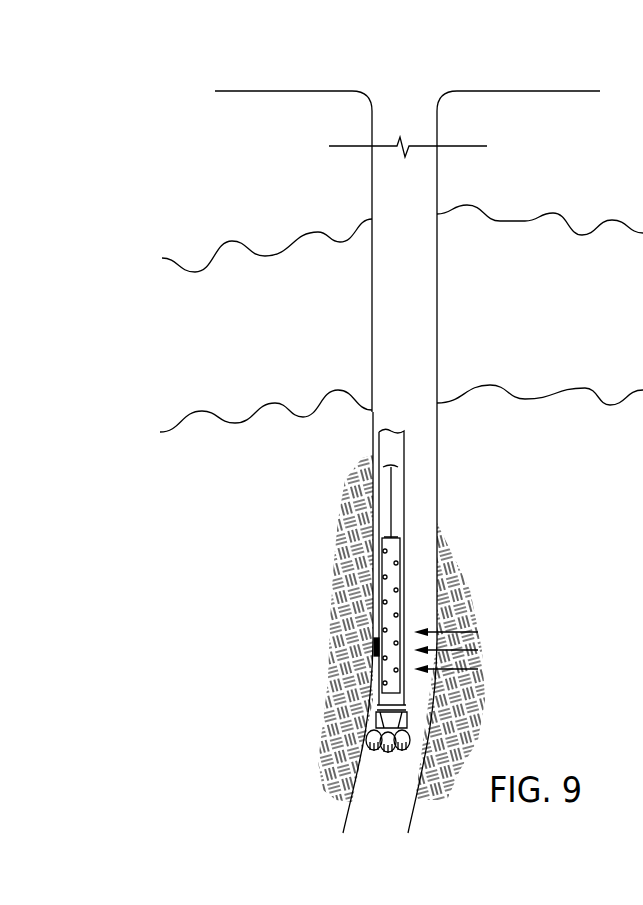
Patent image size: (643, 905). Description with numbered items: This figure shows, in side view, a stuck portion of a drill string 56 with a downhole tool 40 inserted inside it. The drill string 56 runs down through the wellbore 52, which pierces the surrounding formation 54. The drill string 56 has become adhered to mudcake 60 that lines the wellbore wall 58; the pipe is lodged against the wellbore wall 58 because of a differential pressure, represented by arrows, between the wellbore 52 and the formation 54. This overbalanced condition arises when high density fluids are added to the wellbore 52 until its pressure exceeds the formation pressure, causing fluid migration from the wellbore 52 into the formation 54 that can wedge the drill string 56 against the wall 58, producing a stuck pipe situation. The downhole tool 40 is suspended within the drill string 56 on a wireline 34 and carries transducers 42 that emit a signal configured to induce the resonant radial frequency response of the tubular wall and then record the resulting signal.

The wellbore 52 is at (406, 105).
The wellbore wall 58 is at (432, 342).
The formation 54 is at (258, 527).
The drill string 56 is at (405, 447).
The wireline 34 is at (392, 487).
The downhole tool 40 is at (400, 542).
The transducers 42 is at (397, 590).
The mudcake 60 is at (374, 645).